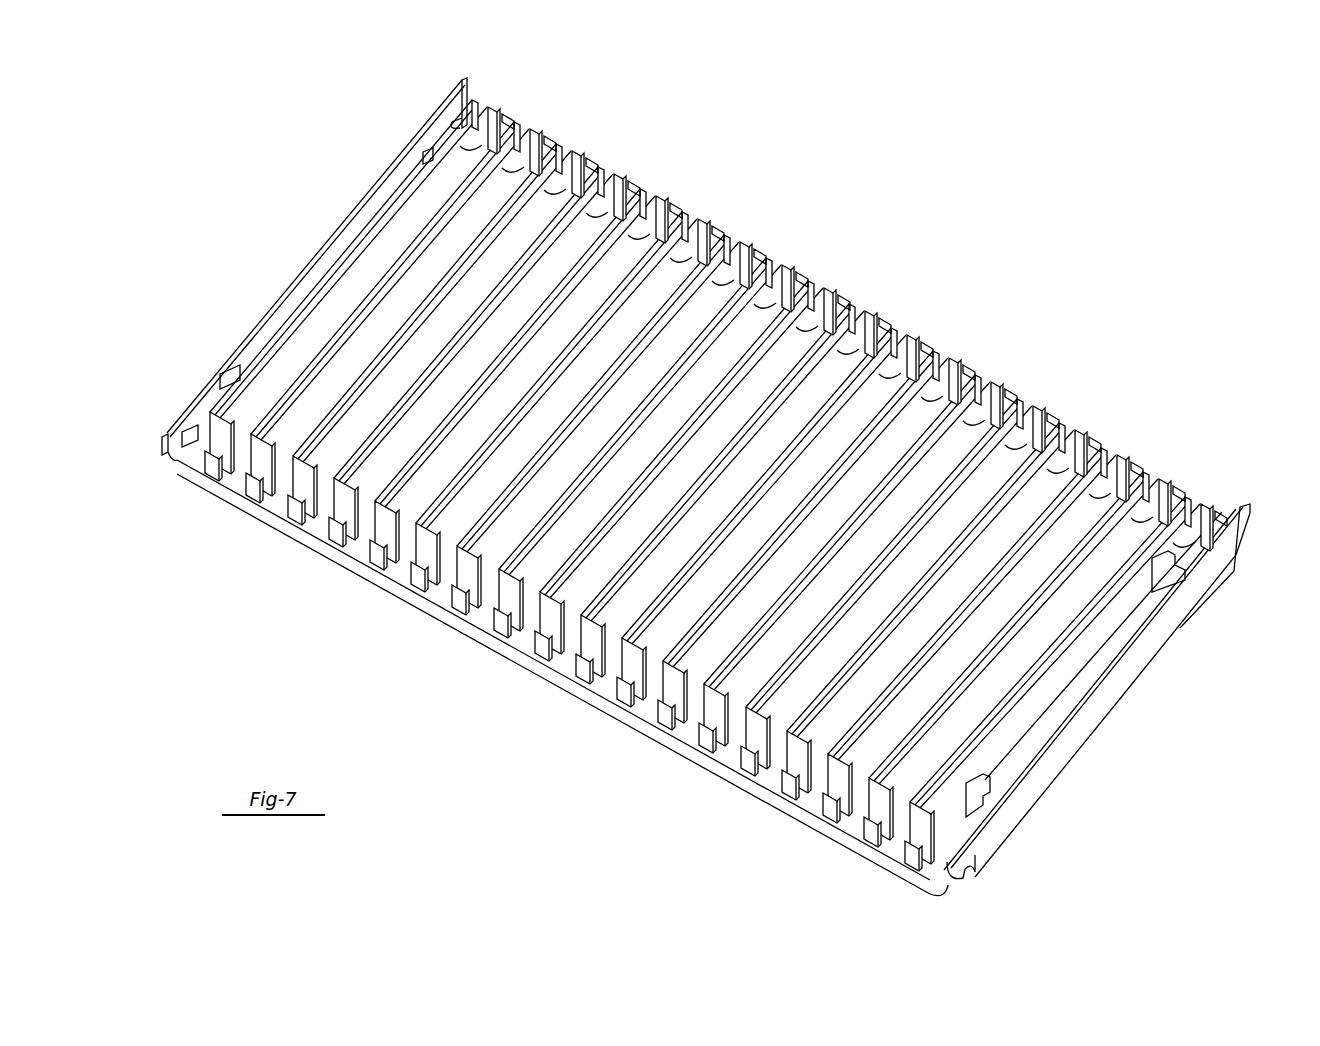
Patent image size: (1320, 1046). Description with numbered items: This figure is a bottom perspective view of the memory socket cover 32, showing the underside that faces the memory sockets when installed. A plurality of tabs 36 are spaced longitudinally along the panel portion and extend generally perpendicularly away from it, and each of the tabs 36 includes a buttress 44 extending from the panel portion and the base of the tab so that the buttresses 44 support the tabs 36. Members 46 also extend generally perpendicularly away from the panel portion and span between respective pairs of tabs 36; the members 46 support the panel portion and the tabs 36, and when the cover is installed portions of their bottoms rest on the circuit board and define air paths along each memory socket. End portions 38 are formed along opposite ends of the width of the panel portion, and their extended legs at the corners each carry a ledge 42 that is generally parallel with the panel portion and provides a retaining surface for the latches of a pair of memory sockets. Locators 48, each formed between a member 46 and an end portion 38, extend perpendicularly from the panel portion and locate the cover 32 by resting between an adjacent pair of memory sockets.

The memory socket cover 32 is at (996, 128).
The tabs 36 is at (474, 99).
The end portions 38 is at (318, 236).
The ledges 42 is at (465, 78).
The buttress 44 is at (561, 681).
The members 46 is at (490, 108).
The locators 48 is at (432, 152).